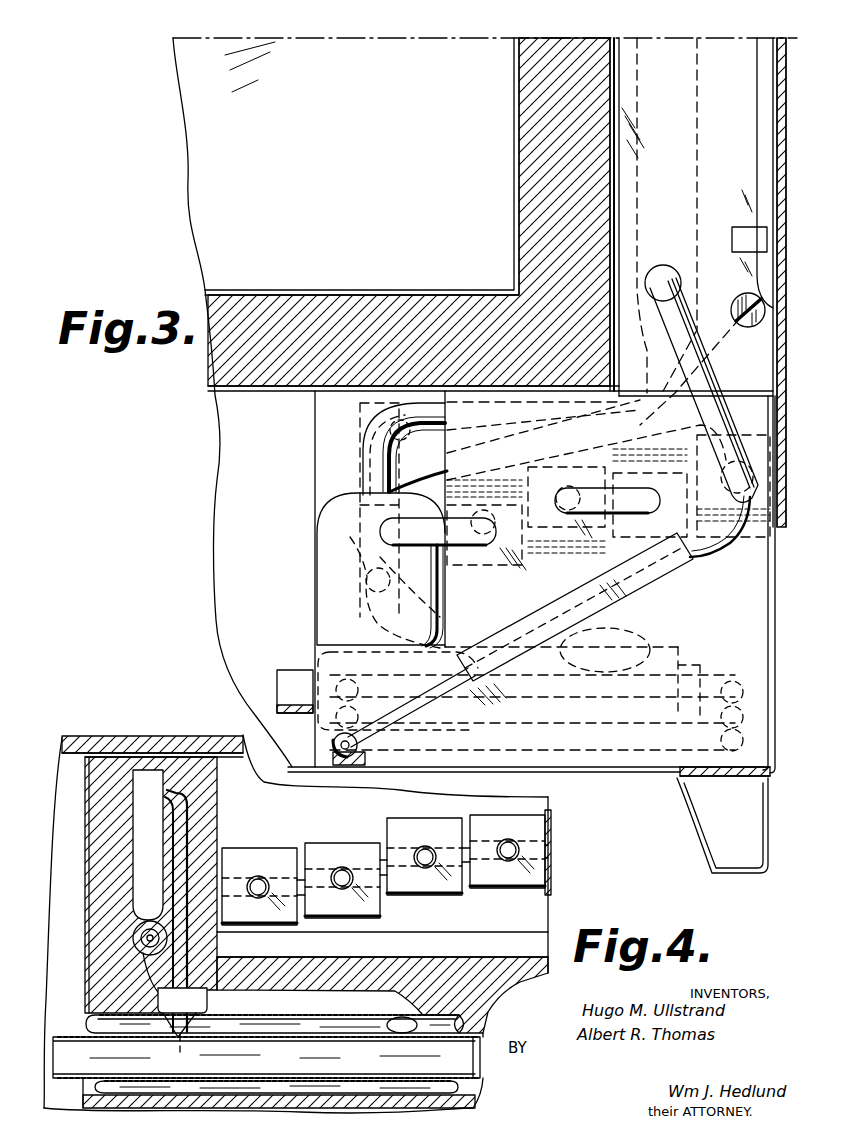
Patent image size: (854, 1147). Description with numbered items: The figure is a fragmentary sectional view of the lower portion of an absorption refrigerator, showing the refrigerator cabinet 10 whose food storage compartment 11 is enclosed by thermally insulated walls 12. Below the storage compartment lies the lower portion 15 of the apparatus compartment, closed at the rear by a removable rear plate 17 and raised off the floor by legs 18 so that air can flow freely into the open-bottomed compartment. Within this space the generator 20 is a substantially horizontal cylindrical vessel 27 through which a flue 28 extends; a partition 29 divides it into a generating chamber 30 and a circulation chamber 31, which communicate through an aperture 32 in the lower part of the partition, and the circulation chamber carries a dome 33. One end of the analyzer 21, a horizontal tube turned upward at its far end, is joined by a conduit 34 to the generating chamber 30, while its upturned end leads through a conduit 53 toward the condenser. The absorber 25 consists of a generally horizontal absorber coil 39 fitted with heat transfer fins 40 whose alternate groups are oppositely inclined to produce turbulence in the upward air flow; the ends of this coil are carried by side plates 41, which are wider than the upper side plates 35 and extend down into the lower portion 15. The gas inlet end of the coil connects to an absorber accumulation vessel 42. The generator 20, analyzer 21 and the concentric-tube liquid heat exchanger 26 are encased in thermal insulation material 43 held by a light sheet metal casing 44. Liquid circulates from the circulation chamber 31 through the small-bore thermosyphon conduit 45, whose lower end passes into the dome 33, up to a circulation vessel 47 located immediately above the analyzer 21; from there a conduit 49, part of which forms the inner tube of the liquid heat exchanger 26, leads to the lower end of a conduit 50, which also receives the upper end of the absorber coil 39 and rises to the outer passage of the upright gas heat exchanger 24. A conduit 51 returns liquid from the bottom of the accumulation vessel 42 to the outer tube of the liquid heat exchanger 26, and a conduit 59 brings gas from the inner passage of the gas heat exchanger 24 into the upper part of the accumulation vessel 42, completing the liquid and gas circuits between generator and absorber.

In FIG. 3, the refrigerator cabinet 10 is at (181, 185).
In FIG. 3, the food storage compartment 11 is at (362, 166).
In FIG. 3, the thermally insulated walls 12 is at (522, 181).
In FIG. 4, the thermally insulated walls 12 is at (163, 741).
In FIG. 4, the lower portion of apparatus compartment 15 is at (258, 864).
In FIG. 3, the removable rear plate 17 is at (787, 322).
In FIG. 4, the removable rear plate 17 is at (551, 851).
In FIG. 3, the legs 18 is at (769, 826).
In FIG. 3, the generator 20 is at (696, 656).
In FIG. 4, the generator 20 is at (258, 1016).
In FIG. 3, the analyzer 21 is at (371, 553).
In FIG. 4, the analyzer 21 is at (134, 938).
In FIG. 3, the gas heat exchanger 24 is at (690, 144).
In FIG. 3, the absorber 25 is at (641, 456).
In FIG. 4, the absorber 25 is at (371, 905).
In FIG. 3, the liquid heat exchanger 26 is at (723, 685).
In FIG. 3, the horizontal cylindrical vessel 27 is at (669, 648).
In FIG. 4, the horizontal cylindrical vessel 27 is at (480, 1018).
In FIG. 3, the flue 28 is at (277, 678).
In FIG. 4, the flue 28 is at (471, 1085).
In FIG. 4, the partition 29 is at (240, 1040).
In FIG. 4, the generating chamber 30 is at (315, 1031).
In FIG. 4, the circulation chamber 31 is at (89, 1031).
In FIG. 4, the aperture 32 is at (222, 1088).
In FIG. 3, the dome 33 is at (442, 630).
In FIG. 4, the dome 33 is at (208, 1001).
In FIG. 3, the conduit 34 is at (490, 626).
In FIG. 4, the conduit 34 is at (256, 976).
In FIG. 3, the side plates 35 is at (756, 362).
In FIG. 3, the absorber coil 39 is at (453, 548).
In FIG. 4, the absorber coil 39 is at (341, 866).
In FIG. 3, the heat transfer fins 40 is at (560, 557).
In FIG. 4, the heat transfer fins 40 is at (392, 824).
In FIG. 3, the side plates 41 is at (760, 621).
In FIG. 4, the side plates 41 is at (549, 808).
In FIG. 3, the absorber accumulation vessel 42 is at (326, 557).
In FIG. 3, the thermal insulation material 43 is at (322, 463).
In FIG. 4, the thermal insulation material 43 is at (93, 883).
In FIG. 3, the sheet metal casing 44 is at (330, 448).
In FIG. 4, the sheet metal casing 44 is at (97, 858).
In FIG. 3, the thermosyphon conduit 45 is at (406, 453).
In FIG. 4, the thermosyphon conduit 45 is at (186, 834).
In FIG. 3, the circulation vessel 47 is at (359, 421).
In FIG. 4, the circulation vessel 47 is at (141, 802).
In FIG. 3, the conduit 49 is at (333, 746).
In FIG. 4, the conduit 49 is at (151, 956).
In FIG. 3, the conduit 50 is at (716, 425).
In FIG. 3, the conduit 51 is at (336, 669).
In FIG. 3, the conduit 53 is at (768, 191).
In FIG. 3, the conduit 59 is at (371, 463).